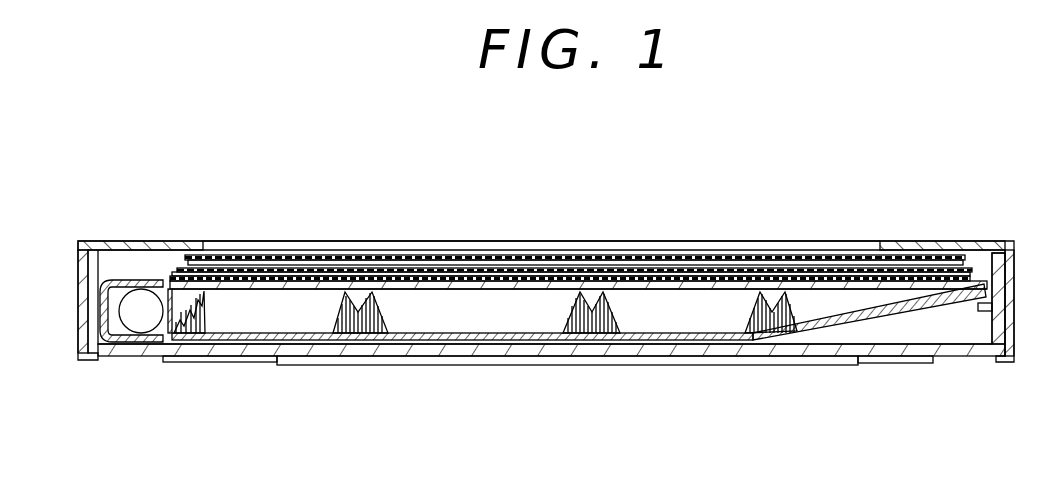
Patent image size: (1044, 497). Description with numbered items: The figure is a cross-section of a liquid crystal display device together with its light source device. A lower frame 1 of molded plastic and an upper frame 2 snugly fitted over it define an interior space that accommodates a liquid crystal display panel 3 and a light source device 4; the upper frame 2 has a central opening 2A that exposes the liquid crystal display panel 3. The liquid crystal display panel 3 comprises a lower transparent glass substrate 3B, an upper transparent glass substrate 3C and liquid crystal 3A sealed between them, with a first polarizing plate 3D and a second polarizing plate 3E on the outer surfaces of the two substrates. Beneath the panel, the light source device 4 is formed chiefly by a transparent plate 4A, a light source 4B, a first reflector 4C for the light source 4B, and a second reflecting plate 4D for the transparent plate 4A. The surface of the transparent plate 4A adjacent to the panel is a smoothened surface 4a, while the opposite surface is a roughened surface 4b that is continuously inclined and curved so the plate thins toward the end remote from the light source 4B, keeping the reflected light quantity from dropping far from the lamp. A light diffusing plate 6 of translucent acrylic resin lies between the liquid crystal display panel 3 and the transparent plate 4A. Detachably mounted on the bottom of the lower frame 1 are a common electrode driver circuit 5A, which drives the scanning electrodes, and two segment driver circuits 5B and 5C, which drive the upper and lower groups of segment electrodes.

The lower frame 1 is at (975, 352).
The upper frame 2 is at (980, 247).
The central opening 2A is at (883, 247).
The liquid crystal display panel 3 is at (571, 212).
The liquid crystal 3A is at (457, 270).
The lower transparent glass substrate 3B is at (412, 262).
The upper transparent glass substrate 3C is at (500, 273).
The first polarizing plate 3D is at (375, 262).
The second polarizing plate 3E is at (357, 197).
The light source device 4 is at (526, 351).
The transparent plate 4A is at (216, 318).
The light source 4B is at (140, 328).
The first reflector 4C is at (104, 342).
The second reflecting plate 4D is at (224, 341).
The smoothened surface 4a is at (826, 292).
The roughened surface 4b is at (898, 313).
The common electrode driver circuit 5A is at (327, 362).
The segment driver circuit 5B is at (247, 362).
The segment driver circuit 5C is at (870, 362).
The light diffusing plate 6 is at (671, 283).